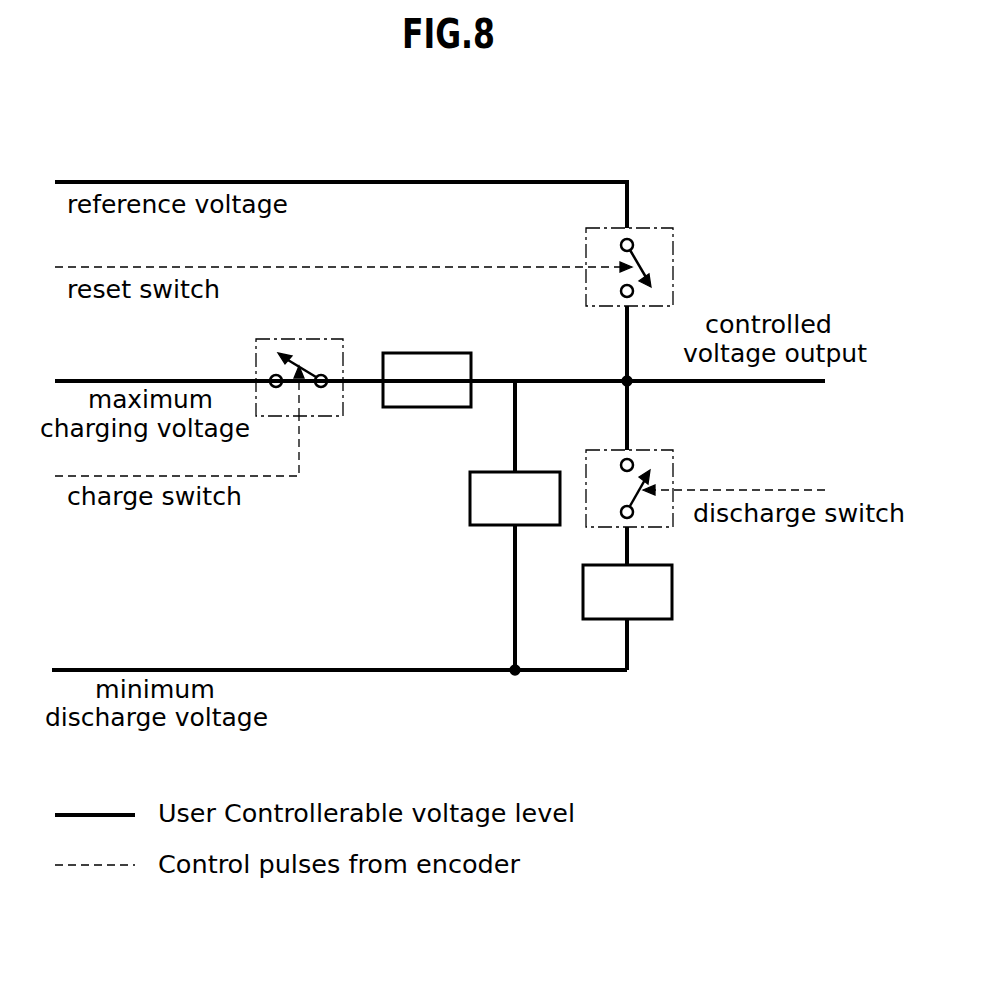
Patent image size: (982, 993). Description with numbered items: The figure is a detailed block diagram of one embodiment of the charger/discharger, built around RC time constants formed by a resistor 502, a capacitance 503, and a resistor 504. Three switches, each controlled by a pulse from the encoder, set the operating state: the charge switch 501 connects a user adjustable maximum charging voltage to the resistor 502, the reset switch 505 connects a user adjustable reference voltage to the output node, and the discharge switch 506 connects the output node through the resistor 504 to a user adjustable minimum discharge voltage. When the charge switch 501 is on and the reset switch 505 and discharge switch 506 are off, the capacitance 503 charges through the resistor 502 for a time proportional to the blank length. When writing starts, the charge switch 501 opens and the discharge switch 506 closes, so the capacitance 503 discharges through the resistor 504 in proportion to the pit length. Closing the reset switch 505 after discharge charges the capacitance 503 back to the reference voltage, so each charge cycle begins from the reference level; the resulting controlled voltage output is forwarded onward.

The charge switch 501 is at (318, 418).
The resistor 502 is at (423, 356).
The capacitance 503 is at (496, 518).
The resistor 504 is at (665, 595).
The reset switch 505 is at (673, 267).
The discharge switch 506 is at (673, 458).